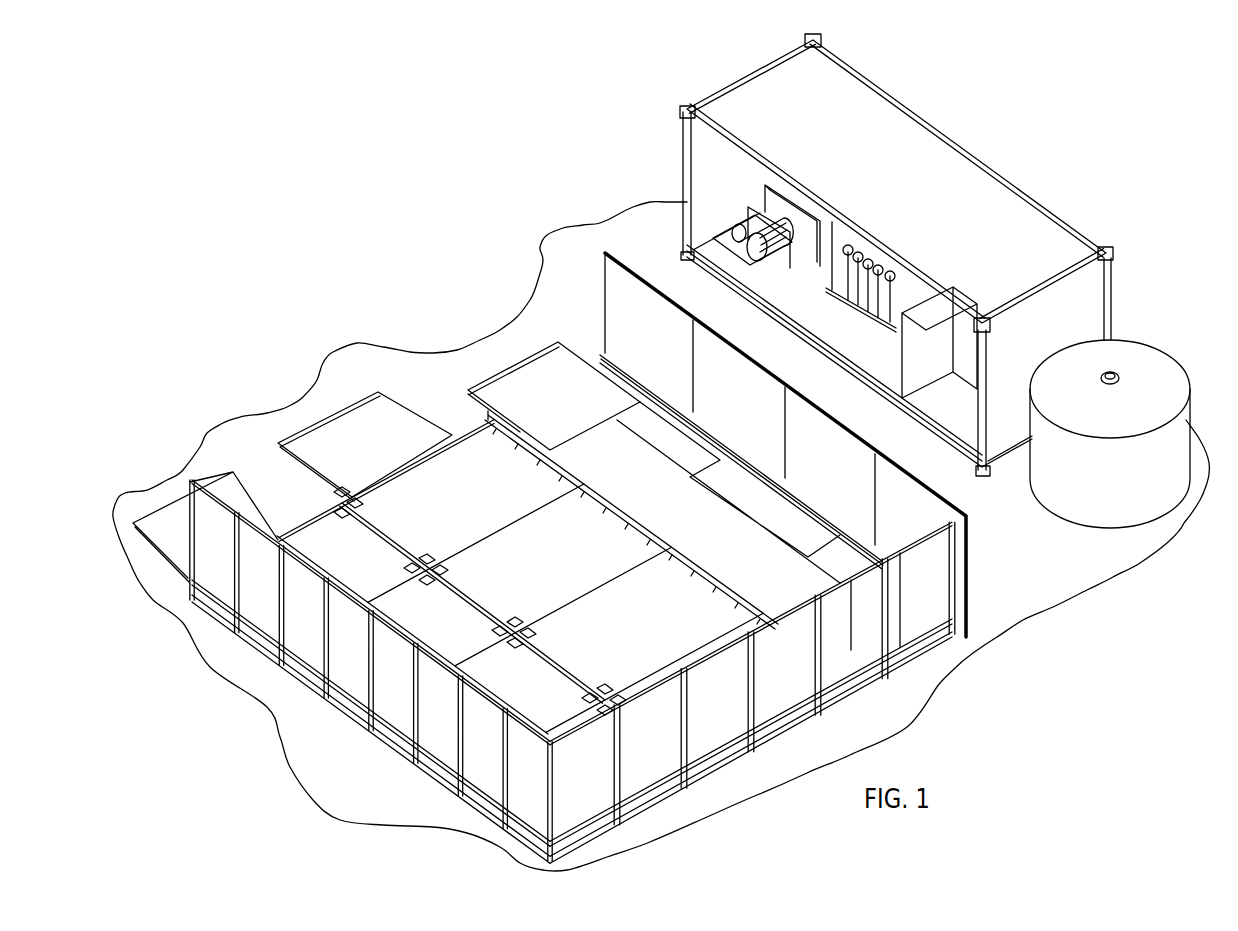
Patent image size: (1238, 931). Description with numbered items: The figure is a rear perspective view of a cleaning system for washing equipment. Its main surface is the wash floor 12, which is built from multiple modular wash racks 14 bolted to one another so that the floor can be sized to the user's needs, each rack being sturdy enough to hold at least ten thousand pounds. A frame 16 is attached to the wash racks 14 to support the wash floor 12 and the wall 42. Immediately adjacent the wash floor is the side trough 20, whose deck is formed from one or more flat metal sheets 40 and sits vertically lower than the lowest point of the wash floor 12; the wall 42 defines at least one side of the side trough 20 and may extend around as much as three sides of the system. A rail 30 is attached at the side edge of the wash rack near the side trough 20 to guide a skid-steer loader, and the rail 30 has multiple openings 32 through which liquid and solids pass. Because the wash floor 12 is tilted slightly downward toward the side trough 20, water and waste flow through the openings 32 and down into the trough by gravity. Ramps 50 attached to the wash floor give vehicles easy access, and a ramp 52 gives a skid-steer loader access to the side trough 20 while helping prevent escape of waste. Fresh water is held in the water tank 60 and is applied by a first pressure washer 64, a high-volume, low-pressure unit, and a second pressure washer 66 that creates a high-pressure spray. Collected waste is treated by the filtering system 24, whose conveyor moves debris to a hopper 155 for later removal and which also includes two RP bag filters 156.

The wash floor 12 is at (290, 522).
The wash racks 14 is at (451, 491).
The frame 16 is at (250, 642).
The side trough 20 is at (826, 500).
The filtering system 24 is at (858, 338).
The rail 30 is at (566, 468).
The openings 32 is at (642, 546).
The flat metal sheets 40 is at (717, 543).
The wall 42 is at (638, 298).
The ramps 50 is at (333, 427).
The ramp 52 is at (530, 373).
The water tank 60 is at (1150, 360).
The first pressure washer 64 is at (735, 236).
The second pressure washer 66 is at (937, 357).
The hopper 155 is at (758, 190).
The RP bag filters 156 is at (843, 248).